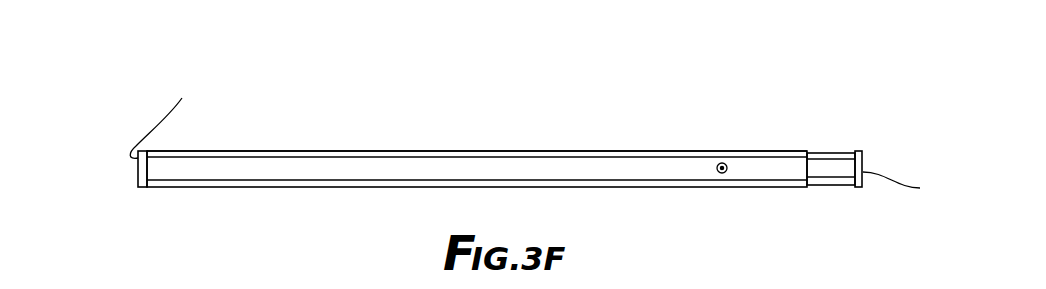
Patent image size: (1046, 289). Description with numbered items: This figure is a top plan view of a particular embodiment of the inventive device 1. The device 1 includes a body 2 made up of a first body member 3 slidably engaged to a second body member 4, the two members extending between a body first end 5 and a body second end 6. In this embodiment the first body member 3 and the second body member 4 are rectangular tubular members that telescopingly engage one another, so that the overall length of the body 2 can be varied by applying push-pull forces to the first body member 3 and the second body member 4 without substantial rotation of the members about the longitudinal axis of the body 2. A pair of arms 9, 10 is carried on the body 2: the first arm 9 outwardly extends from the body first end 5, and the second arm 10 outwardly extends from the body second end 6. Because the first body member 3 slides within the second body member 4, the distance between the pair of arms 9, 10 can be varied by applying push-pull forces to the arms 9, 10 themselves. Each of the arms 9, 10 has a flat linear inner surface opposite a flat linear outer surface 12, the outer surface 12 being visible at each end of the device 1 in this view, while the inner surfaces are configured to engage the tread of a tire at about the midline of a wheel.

The device 1 is at (65, 77).
The body 2 is at (524, 137).
The first body member 3 is at (381, 147).
The second body member 4 is at (823, 150).
The body first end 5 is at (218, 168).
The body second end 6 is at (841, 155).
The first arm 9 is at (137, 172).
The second arm 10 is at (866, 160).
The flat linear outer surface 12 is at (542, 136).